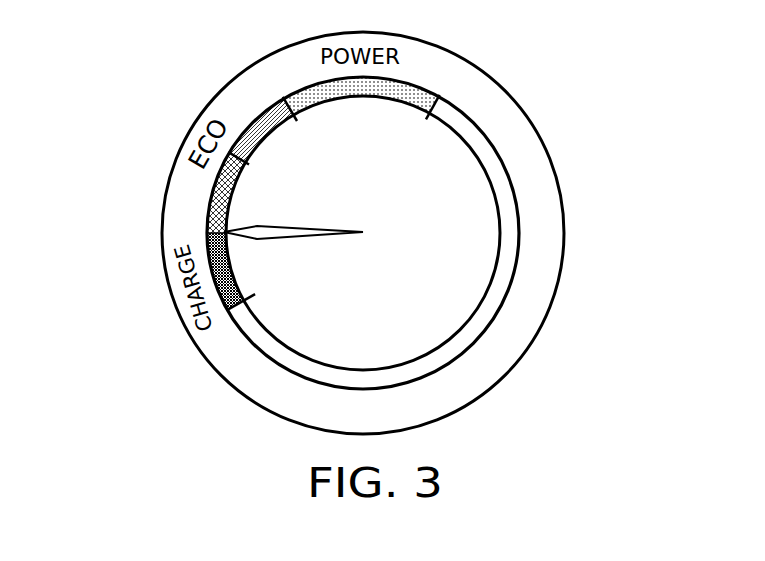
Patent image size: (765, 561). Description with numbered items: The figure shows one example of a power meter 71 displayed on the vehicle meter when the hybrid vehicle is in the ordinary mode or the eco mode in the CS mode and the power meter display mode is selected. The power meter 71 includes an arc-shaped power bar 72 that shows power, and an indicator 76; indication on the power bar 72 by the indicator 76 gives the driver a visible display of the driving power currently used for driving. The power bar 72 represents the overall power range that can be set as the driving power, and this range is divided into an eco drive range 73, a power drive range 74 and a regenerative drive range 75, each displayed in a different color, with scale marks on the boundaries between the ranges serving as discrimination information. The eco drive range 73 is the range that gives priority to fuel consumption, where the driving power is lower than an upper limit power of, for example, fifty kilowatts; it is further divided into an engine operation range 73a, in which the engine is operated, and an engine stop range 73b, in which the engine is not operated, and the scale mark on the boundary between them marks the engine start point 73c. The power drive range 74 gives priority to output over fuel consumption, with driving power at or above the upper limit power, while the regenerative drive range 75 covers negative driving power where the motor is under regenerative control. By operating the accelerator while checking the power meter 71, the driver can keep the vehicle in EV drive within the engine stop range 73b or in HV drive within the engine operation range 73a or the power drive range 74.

The power meter 71 is at (533, 83).
The power bar 72 is at (278, 97).
The eco drive range 73 is at (63, 135).
The engine operation range 73a is at (252, 110).
The engine stop range 73b is at (207, 187).
The engine start point 73c is at (248, 164).
The power drive range 74 is at (432, 90).
The regenerative drive range 75 is at (237, 282).
The indicator 76 is at (270, 225).